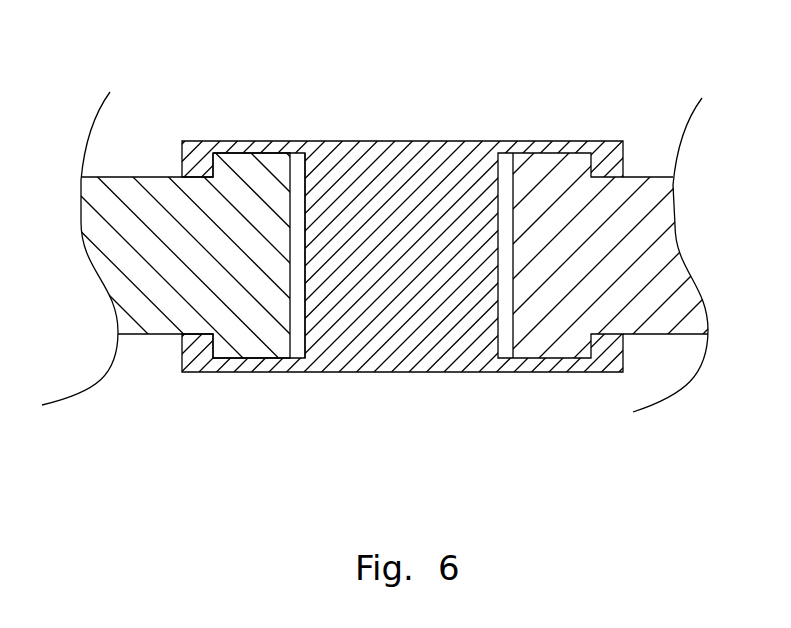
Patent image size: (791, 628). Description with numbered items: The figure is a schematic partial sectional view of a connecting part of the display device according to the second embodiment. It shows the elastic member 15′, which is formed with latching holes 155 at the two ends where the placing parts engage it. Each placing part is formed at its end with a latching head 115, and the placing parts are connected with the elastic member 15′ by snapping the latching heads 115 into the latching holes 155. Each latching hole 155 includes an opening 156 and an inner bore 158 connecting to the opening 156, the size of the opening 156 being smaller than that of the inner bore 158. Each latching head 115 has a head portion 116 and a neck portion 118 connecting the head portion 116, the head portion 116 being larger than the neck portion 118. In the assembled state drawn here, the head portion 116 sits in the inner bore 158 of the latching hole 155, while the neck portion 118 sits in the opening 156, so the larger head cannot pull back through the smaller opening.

The elastic member 15′ is at (408, 207).
The latching hole 155 is at (248, 183).
The opening 156 is at (197, 175).
The inner bore 158 is at (300, 206).
The latching head 115 is at (246, 331).
The head portion 116 is at (252, 323).
The neck portion 118 is at (203, 268).